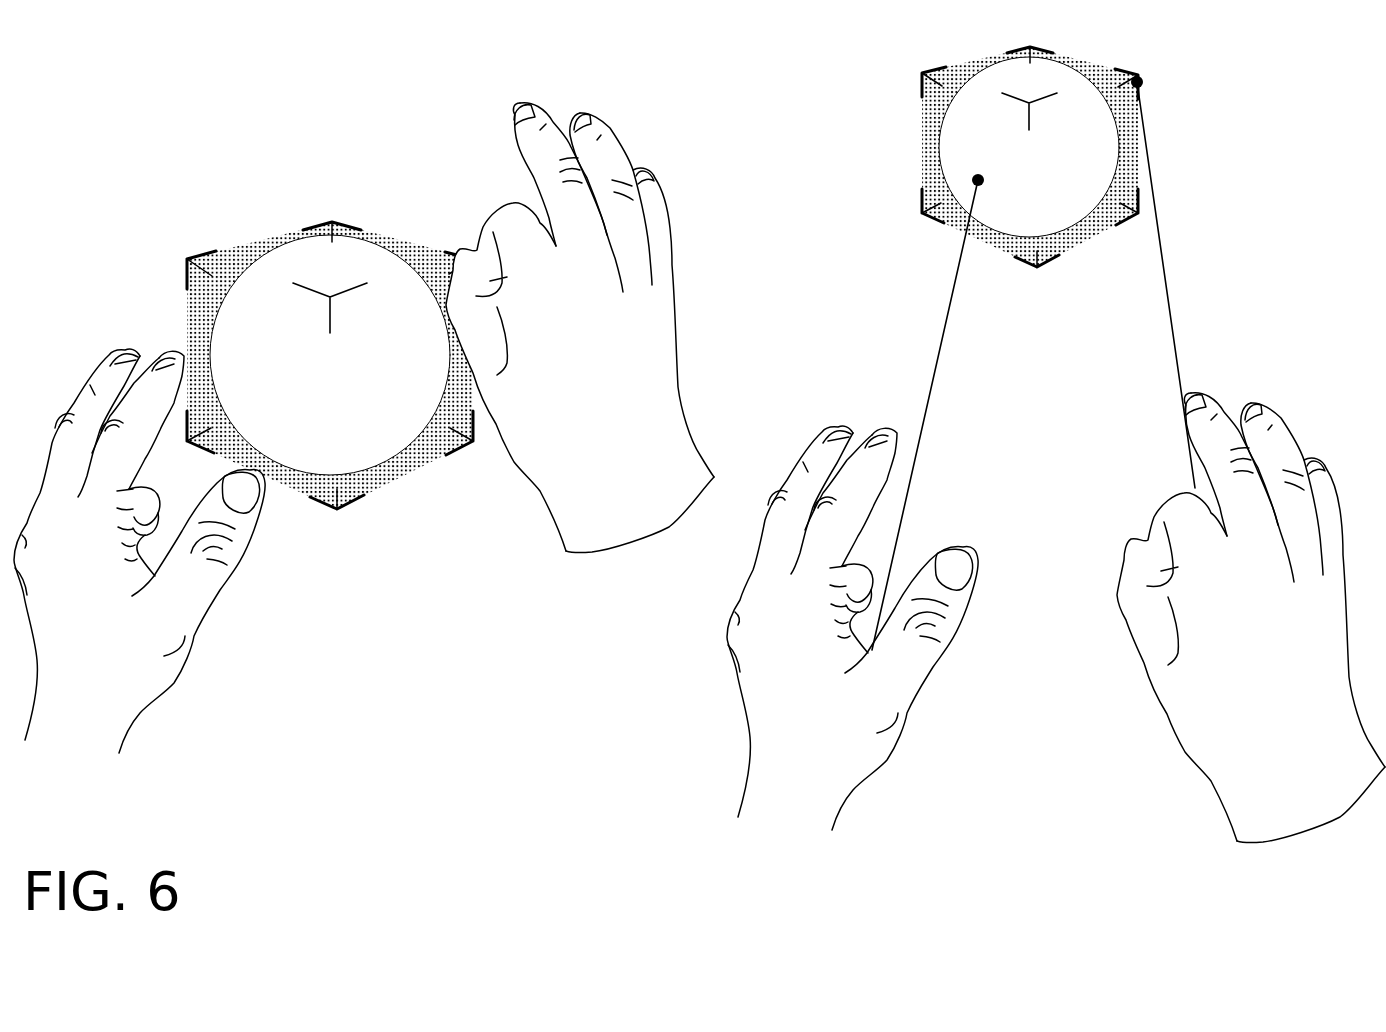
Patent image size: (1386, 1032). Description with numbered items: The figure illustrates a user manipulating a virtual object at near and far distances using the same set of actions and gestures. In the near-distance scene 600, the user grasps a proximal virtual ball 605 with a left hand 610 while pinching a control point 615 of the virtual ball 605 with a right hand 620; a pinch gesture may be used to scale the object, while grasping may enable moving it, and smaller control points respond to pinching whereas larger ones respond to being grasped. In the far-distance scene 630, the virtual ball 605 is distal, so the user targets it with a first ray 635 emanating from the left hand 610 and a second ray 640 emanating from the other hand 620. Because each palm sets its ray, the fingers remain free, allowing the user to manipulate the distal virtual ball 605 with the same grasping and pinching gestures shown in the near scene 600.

The near-distance manipulation scene 600 is at (237, 128).
The virtual ball 605 is at (355, 386).
The left hand 610 is at (109, 700).
The control point 615 is at (460, 245).
The right hand 620 is at (642, 461).
The far-distance manipulation scene 630 is at (1252, 69).
The first ray 635 is at (950, 318).
The second ray 640 is at (1170, 300).